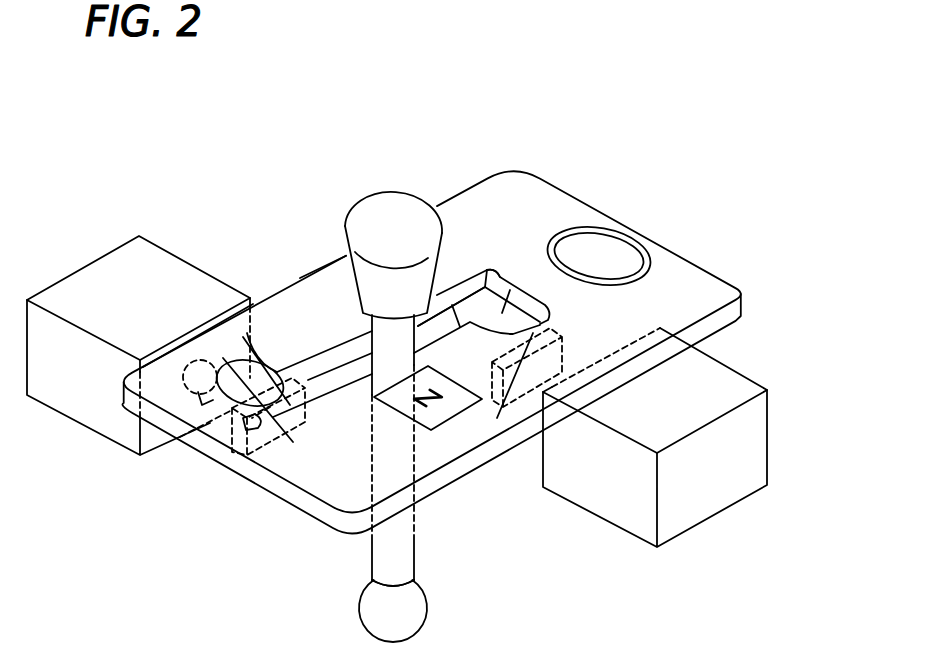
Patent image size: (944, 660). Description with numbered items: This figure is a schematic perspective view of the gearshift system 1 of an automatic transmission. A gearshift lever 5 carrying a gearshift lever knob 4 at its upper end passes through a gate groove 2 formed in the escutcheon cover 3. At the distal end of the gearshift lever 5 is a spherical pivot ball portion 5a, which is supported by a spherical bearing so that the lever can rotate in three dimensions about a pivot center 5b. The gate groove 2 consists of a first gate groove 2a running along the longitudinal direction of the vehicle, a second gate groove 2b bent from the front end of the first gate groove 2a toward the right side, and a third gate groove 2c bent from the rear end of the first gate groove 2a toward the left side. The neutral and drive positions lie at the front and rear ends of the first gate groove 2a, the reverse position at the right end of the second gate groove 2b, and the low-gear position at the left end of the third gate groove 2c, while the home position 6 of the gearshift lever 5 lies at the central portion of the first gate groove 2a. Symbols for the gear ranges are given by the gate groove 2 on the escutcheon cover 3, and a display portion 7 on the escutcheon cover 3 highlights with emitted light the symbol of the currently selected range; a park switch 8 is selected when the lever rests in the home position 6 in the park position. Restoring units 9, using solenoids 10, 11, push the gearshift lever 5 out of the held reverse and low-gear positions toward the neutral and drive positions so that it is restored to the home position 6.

The gearshift system 1 is at (260, 517).
The gate groove 2 is at (325, 400).
The first gate groove 2a is at (488, 275).
The second gate groove 2b is at (445, 340).
The third gate groove 2c is at (240, 455).
The escutcheon cover 3 is at (290, 470).
The gearshift lever knob 4 is at (390, 212).
The gearshift lever 5 is at (368, 320).
The pivot ball portion 5a is at (432, 590).
The pivot center 5b is at (395, 605).
The home position 6 is at (339, 322).
The display portion 7 is at (450, 420).
The park switch 8 is at (627, 250).
The restoring units 9 is at (397, 408).
The solenoid 10 is at (690, 513).
The solenoid 11 is at (170, 272).